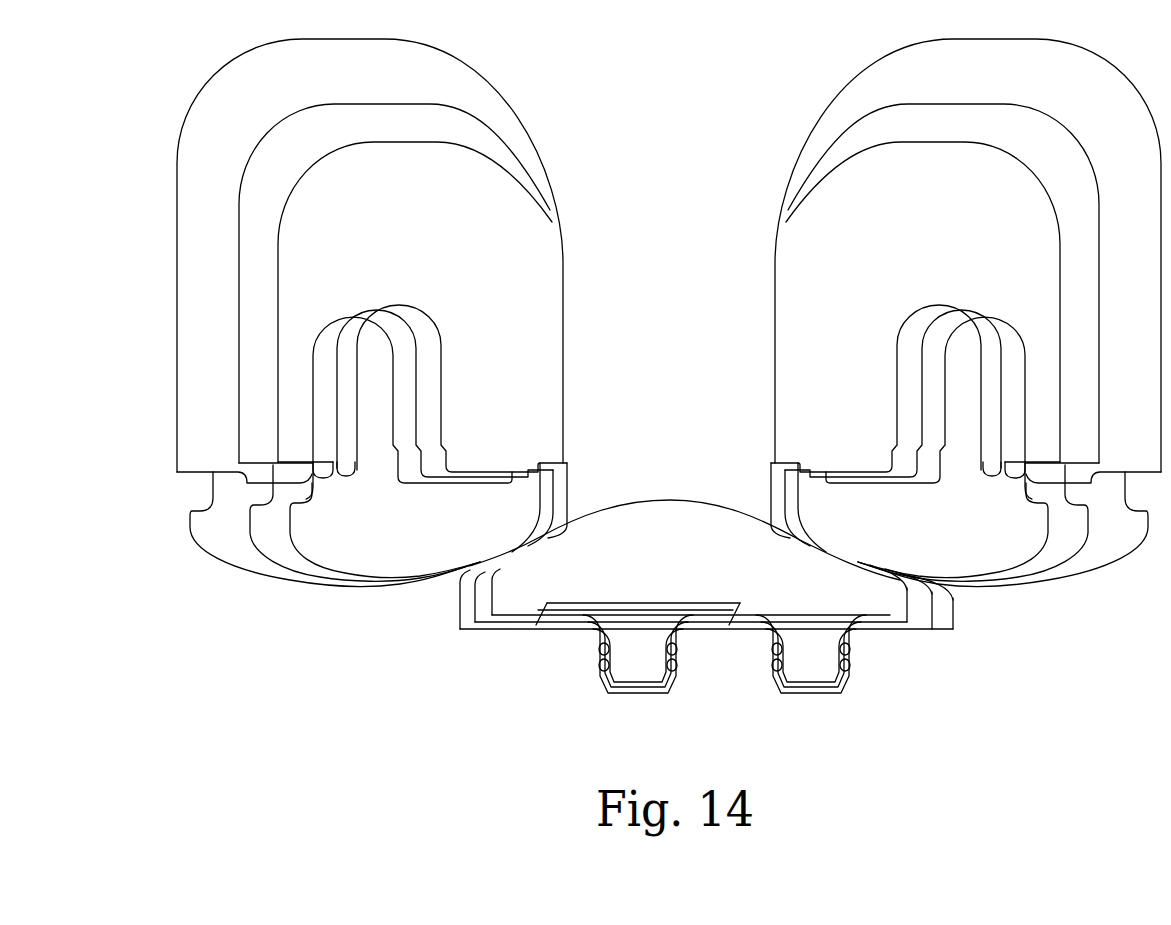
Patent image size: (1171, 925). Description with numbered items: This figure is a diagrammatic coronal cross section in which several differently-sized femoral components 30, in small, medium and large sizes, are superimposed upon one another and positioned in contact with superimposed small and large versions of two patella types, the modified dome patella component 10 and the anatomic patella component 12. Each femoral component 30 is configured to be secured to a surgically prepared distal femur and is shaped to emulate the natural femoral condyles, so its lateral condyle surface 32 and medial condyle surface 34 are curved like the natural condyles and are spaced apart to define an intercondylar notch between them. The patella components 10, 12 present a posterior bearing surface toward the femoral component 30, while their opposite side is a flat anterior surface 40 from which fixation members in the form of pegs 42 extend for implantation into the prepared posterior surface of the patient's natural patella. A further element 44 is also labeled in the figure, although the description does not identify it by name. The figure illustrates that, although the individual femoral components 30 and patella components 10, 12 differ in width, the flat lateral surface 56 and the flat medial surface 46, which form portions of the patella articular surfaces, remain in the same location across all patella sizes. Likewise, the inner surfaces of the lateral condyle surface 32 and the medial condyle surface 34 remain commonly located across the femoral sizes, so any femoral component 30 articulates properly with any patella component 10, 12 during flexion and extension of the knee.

The modified dome patella component 10 is at (933, 621).
The anatomic patella component 12 is at (907, 589).
The femoral component 30 is at (510, 183).
The lateral condyle surface 32 is at (993, 584).
The medial condyle surface 34 is at (378, 578).
The flat anterior surface 40 is at (495, 617).
The pegs 42 is at (813, 695).
The dome 44 is at (670, 498).
The flat medial surface 46 is at (550, 513).
The flat lateral surface 56 is at (757, 516).